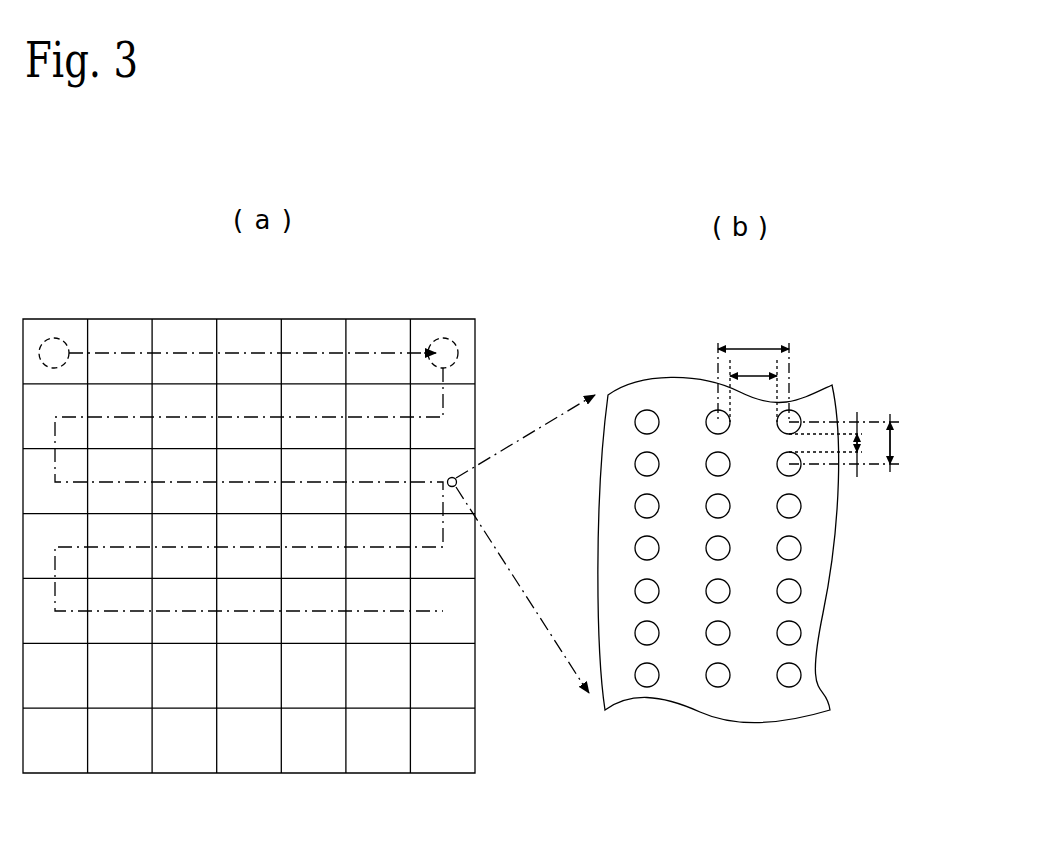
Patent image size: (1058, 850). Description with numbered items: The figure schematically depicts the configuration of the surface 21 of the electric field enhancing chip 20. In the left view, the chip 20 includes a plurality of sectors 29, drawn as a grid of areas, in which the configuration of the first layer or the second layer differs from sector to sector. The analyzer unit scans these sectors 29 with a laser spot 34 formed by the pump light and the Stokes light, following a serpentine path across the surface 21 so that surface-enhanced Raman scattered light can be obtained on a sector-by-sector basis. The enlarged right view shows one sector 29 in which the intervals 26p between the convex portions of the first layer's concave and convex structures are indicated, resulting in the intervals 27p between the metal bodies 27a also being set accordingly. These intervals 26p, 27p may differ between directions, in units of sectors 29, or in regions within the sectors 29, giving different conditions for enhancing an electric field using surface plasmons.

The electric field enhancing chip 20 is at (289, 497).
The surface 21 is at (289, 498).
The sector 29 is at (182, 330).
The laser spot 34 is at (52, 339).
The metal body 27a is at (648, 418).
The interval between convex portions 26p is at (754, 348).
The interval between metal bodies 27p is at (760, 374).